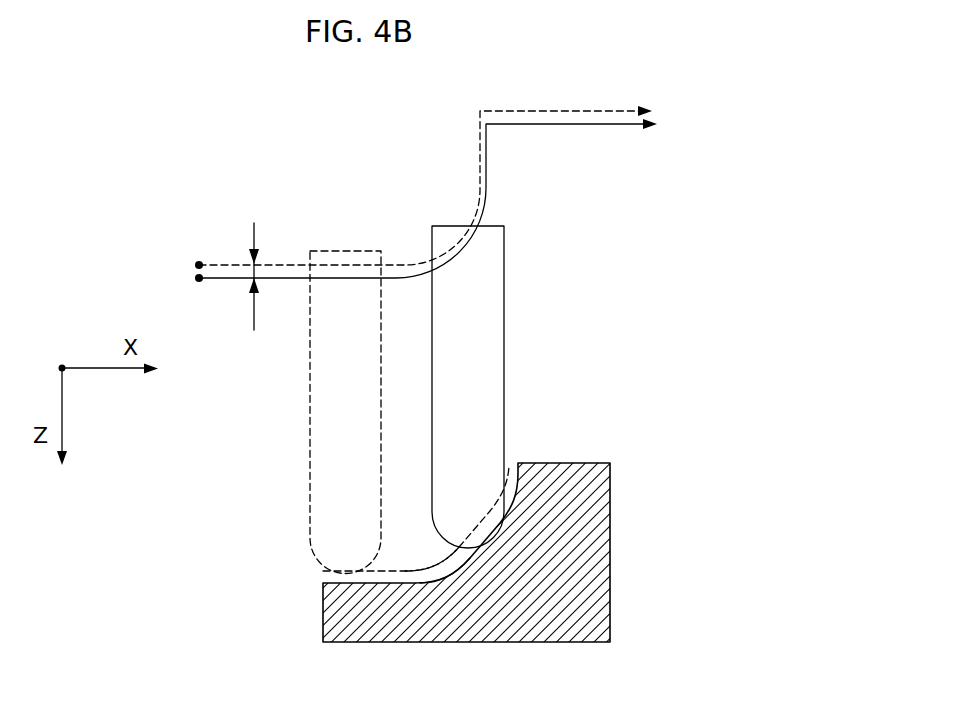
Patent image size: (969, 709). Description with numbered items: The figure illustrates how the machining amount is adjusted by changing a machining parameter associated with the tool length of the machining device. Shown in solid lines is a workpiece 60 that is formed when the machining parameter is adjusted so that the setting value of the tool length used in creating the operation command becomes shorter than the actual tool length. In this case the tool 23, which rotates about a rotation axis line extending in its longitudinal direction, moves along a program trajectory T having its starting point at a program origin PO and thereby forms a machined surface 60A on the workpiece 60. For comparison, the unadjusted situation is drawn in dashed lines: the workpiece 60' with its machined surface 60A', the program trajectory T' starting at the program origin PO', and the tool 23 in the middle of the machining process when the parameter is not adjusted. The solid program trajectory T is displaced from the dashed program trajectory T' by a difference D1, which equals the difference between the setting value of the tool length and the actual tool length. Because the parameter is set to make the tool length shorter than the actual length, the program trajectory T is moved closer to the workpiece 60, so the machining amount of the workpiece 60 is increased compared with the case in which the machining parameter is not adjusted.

The tool 23 is at (504, 345).
The workpiece 60 is at (467, 537).
The machined surface 60A is at (474, 625).
The workpiece 60' is at (347, 521).
The machined surface 60A' is at (330, 514).
The program trajectory T is at (428, 198).
The program trajectory T' is at (425, 185).
The program origin PO is at (166, 240).
The program origin PO' is at (216, 221).
The difference D1 is at (254, 271).